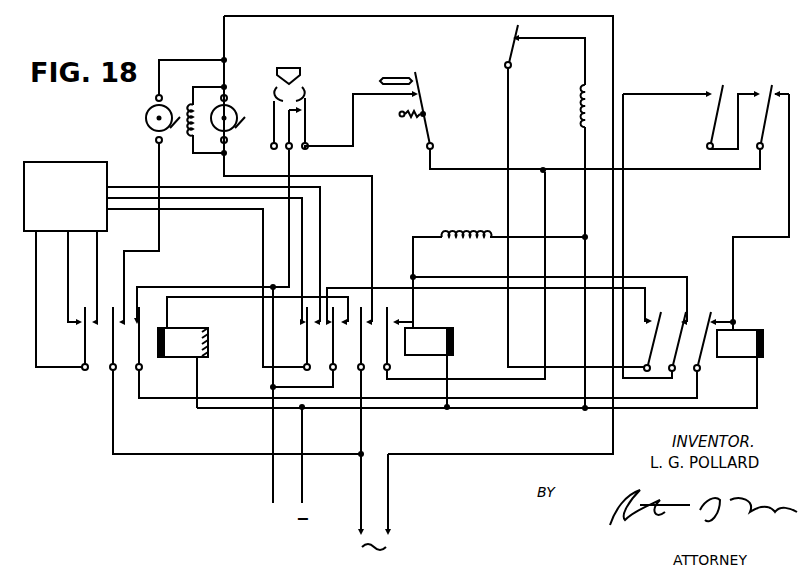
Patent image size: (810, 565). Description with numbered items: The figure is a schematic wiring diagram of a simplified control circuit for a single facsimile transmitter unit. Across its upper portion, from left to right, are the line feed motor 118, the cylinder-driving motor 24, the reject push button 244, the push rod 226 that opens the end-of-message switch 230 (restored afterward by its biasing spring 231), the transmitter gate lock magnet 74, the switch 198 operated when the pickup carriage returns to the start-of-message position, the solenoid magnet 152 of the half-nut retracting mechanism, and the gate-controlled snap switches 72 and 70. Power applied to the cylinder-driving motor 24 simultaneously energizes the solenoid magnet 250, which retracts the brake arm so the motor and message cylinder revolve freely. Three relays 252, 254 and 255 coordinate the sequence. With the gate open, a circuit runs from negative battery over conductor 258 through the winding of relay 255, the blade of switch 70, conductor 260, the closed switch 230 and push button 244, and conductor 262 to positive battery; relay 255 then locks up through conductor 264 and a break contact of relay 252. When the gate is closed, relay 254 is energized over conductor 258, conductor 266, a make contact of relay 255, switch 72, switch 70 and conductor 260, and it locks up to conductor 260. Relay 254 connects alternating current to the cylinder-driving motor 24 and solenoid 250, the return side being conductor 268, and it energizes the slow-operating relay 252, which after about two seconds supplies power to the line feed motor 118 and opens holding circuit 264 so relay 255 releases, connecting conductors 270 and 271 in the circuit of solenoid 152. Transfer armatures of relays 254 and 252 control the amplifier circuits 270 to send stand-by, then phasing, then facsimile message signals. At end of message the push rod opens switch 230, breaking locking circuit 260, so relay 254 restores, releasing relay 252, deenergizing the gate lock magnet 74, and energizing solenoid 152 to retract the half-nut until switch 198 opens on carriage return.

The conductor 268 is at (223, 44).
The line feed motor 118 is at (146, 118).
The cylinder-driving motor 24 is at (229, 106).
The solenoid magnet 250 is at (188, 137).
The reject push button 244 is at (293, 65).
The push rod 226 is at (412, 55).
The end-of-message switch 230 is at (418, 73).
The biasing spring 231 is at (419, 119).
The conductor 260 is at (462, 170).
The switch 198 is at (512, 43).
The solenoid magnet 152 is at (578, 100).
The snap switch 72 is at (721, 88).
The snap switch 70 is at (767, 90).
The transmitter gate lock magnet 74 is at (463, 232).
The conductor 266 is at (453, 276).
The amplifier circuits 270 is at (70, 162).
The conductor 271 is at (509, 362).
The conductor 262 is at (288, 248).
The relay 252 is at (187, 328).
The relay 254 is at (435, 328).
The relay 255 is at (745, 330).
The conductor 264 is at (412, 401).
The conductor 258 is at (472, 409).